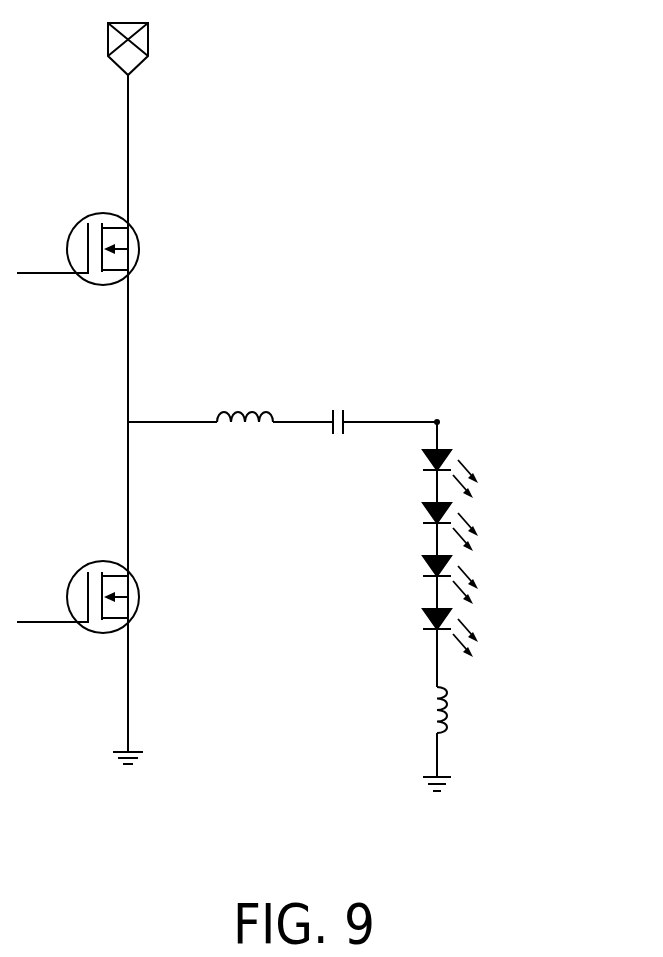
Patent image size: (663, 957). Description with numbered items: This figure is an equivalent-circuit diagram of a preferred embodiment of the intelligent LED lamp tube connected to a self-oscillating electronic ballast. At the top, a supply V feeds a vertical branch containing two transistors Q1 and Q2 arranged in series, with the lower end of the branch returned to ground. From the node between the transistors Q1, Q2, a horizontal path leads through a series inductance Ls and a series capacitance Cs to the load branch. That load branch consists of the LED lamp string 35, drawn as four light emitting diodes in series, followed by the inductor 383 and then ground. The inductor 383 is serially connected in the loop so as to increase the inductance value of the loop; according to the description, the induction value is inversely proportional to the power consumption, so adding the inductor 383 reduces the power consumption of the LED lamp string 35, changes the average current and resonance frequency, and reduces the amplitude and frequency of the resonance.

The LED lamp string 35 is at (480, 517).
The inductor 383 is at (450, 712).
The first transistor Q1 is at (104, 249).
The second transistor Q2 is at (104, 597).
The resonant inductor Ls is at (245, 392).
The resonant capacitor Cs is at (341, 398).
The voltage source V is at (152, 49).